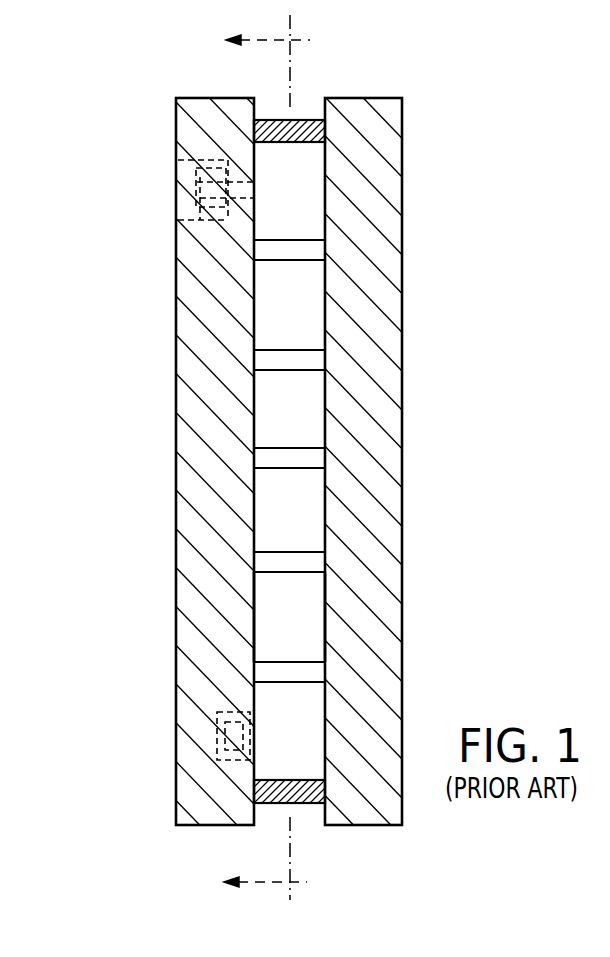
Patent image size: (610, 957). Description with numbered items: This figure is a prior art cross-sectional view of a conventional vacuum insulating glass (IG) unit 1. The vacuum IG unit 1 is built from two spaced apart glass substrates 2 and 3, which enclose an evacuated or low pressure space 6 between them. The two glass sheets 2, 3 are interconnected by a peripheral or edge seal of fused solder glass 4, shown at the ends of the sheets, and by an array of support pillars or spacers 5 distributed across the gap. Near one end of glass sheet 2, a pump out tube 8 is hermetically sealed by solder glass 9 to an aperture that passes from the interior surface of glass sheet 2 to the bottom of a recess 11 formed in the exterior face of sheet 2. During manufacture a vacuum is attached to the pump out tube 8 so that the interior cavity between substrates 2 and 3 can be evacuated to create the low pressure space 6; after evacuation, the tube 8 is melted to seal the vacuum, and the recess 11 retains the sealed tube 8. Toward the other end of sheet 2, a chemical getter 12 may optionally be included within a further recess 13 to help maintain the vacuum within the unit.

The vacuum IG unit 1 is at (418, 197).
The glass substrate 2 is at (175, 519).
The glass substrate 3 is at (370, 383).
The edge seal of fused solder glass 4 is at (307, 132).
The support pillars or spacers 5 is at (293, 462).
The evacuated or low pressure space 6 is at (270, 600).
The pump out tube 8 is at (186, 195).
The solder glass 9 is at (210, 173).
The recess 11 is at (189, 228).
The chemical getter 12 is at (222, 727).
The recess 13 is at (221, 766).